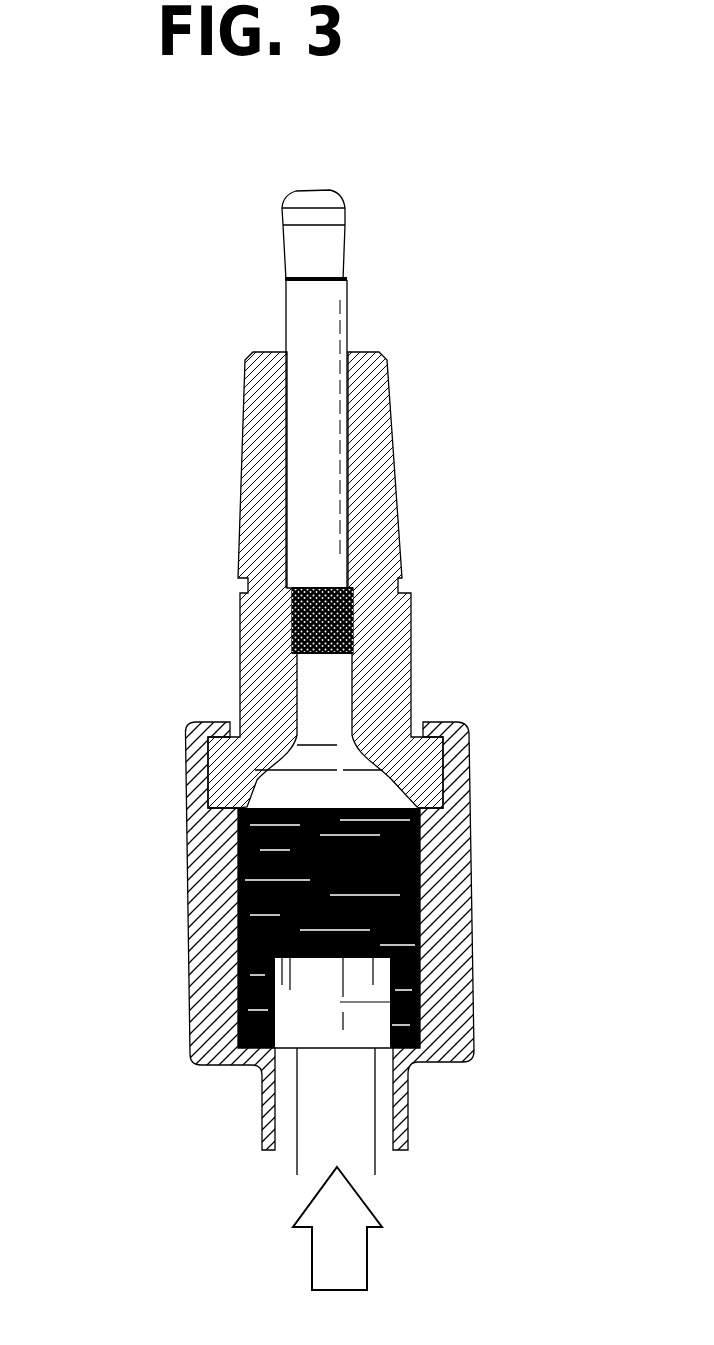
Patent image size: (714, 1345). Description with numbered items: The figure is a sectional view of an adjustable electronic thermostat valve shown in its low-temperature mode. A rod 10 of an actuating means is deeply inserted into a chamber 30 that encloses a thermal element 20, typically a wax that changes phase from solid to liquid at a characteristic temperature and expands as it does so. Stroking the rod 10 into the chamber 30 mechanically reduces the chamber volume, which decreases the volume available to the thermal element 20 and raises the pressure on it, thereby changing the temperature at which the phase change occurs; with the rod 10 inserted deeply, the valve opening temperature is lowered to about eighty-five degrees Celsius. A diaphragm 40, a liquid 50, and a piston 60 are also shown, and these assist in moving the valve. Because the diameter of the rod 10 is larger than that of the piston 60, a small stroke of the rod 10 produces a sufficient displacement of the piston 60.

The rod 10 is at (463, 1026).
The thermal element 20 is at (463, 923).
The chamber 30 is at (187, 886).
The diaphragm 40 is at (425, 846).
The liquid 50 is at (383, 621).
The piston 60 is at (328, 318).